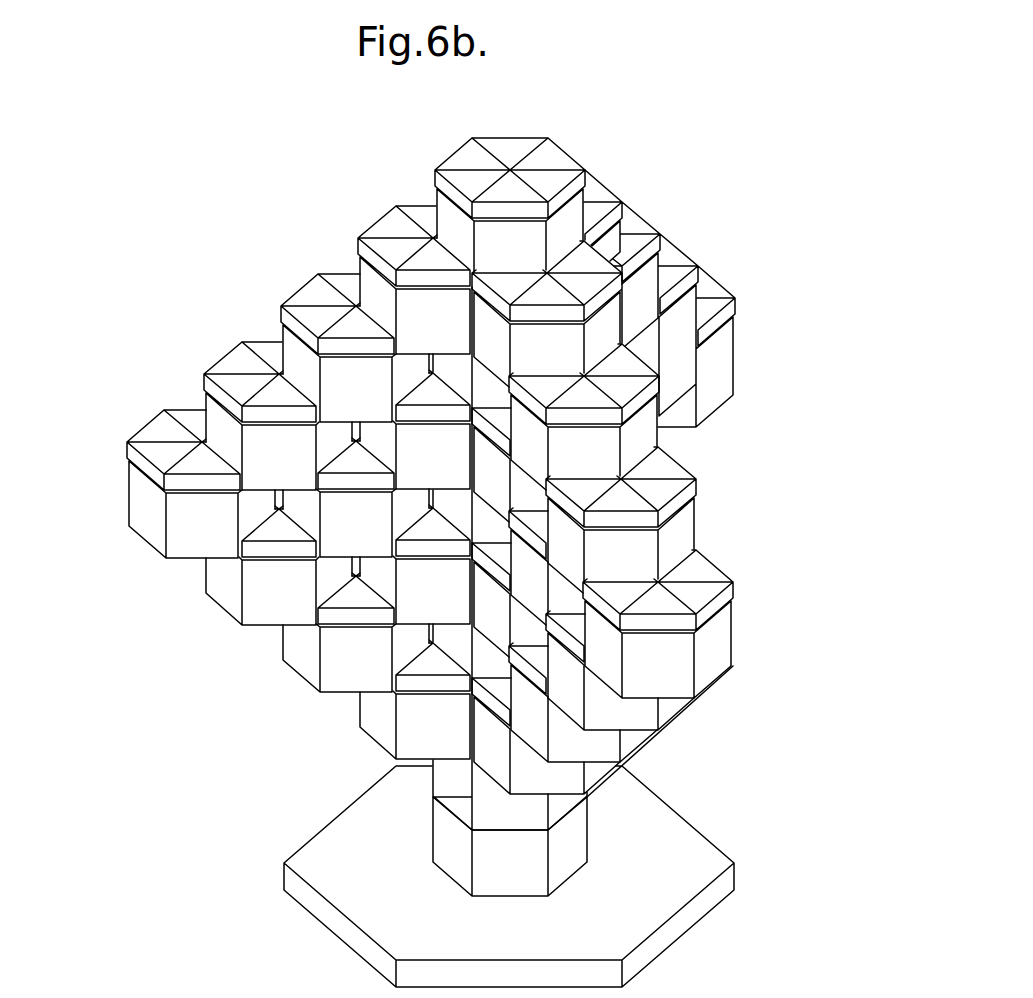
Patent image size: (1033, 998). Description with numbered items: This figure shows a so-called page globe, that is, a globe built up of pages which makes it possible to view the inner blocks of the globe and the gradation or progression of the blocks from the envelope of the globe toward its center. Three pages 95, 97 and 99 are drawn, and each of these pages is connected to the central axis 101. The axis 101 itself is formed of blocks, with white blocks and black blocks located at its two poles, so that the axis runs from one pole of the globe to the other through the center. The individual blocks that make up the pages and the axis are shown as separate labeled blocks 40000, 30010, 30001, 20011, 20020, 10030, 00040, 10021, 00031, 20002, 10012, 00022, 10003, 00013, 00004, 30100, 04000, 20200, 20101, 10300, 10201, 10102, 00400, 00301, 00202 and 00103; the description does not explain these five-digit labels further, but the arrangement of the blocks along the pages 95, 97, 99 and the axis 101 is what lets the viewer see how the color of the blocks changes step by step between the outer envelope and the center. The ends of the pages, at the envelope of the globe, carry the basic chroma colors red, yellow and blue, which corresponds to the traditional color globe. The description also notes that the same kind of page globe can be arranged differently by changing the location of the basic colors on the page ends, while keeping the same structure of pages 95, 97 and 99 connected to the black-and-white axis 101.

The axis 101 is at (574, 142).
The root node prism 40000 is at (497, 236).
The node prism 30010 is at (412, 296).
The node 30001 is at (462, 372).
The node prism 20011 is at (380, 360).
The node prism 20020 is at (340, 383).
The node prism 10030 is at (262, 450).
The node prism 00040 is at (177, 518).
The node prism 10021 is at (340, 532).
The node prism 00031 is at (272, 593).
The node 20002 is at (450, 505).
The node prism 10012 is at (420, 605).
The node prism 00022 is at (347, 658).
The node 10003 is at (440, 598).
The node prism 00013 is at (403, 738).
The base node prism 00004 is at (485, 808).
The node prism 30100 is at (557, 330).
The node prism 04000 is at (694, 268).
The node prism 20200 is at (608, 440).
The node prism 20101 is at (487, 468).
The node prism 10300 is at (647, 540).
The node prism 10201 is at (578, 597).
The node prism 10102 is at (540, 633).
The node prism 00400 is at (680, 660).
The node prism 00301 is at (585, 740).
The node prism 00202 is at (623, 765).
The node prism 00103 is at (557, 777).
The page 99 is at (762, 346).
The page 95 is at (762, 566).
The page 97 is at (210, 598).